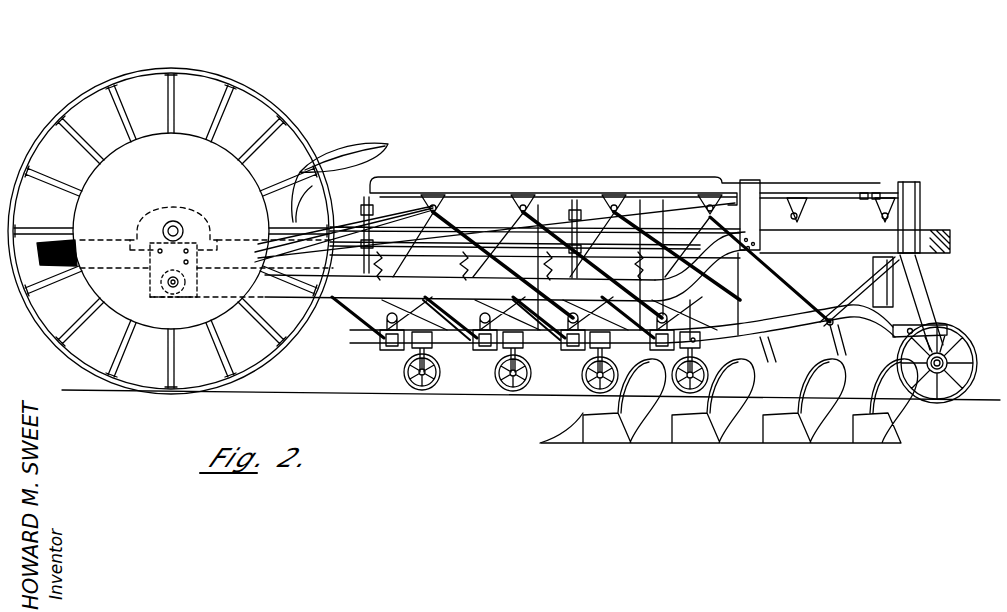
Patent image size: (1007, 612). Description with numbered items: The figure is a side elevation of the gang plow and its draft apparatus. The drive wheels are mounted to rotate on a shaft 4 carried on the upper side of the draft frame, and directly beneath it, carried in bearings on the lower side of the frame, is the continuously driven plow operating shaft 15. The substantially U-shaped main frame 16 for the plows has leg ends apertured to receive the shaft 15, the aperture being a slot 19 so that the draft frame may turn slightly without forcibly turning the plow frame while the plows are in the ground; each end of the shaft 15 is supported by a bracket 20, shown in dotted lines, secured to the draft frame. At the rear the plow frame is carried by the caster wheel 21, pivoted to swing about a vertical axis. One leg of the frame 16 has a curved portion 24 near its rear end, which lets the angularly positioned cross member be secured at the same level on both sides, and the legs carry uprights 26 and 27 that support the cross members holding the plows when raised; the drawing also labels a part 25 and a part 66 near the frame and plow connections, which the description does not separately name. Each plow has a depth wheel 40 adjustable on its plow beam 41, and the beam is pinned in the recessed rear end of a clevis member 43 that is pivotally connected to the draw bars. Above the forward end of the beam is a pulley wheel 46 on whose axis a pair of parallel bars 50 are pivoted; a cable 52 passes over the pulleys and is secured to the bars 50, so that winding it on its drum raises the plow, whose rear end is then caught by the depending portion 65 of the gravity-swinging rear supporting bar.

The shaft 4 is at (178, 229).
The plow operating shaft 15 is at (177, 289).
The main frame 16 is at (460, 288).
The slot 19 is at (170, 288).
The bracket 20 is at (163, 258).
The caster wheel 21 is at (962, 343).
The curved portion 24 is at (700, 266).
The lever 25 is at (350, 237).
The uprights 26 is at (753, 183).
The uprights 27 is at (336, 318).
The wheel 40 is at (430, 388).
The plow beam 41 is at (442, 342).
The clevis member 43 is at (390, 350).
The pulley wheel 46 is at (445, 213).
The parallel bars 50 is at (765, 270).
The cable 52 is at (430, 262).
The depending portion 65 is at (830, 298).
The clamp 66 is at (368, 338).